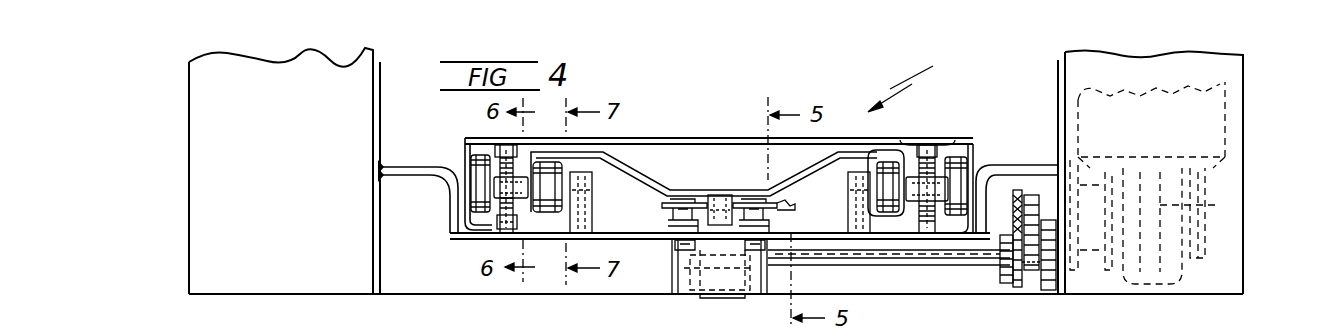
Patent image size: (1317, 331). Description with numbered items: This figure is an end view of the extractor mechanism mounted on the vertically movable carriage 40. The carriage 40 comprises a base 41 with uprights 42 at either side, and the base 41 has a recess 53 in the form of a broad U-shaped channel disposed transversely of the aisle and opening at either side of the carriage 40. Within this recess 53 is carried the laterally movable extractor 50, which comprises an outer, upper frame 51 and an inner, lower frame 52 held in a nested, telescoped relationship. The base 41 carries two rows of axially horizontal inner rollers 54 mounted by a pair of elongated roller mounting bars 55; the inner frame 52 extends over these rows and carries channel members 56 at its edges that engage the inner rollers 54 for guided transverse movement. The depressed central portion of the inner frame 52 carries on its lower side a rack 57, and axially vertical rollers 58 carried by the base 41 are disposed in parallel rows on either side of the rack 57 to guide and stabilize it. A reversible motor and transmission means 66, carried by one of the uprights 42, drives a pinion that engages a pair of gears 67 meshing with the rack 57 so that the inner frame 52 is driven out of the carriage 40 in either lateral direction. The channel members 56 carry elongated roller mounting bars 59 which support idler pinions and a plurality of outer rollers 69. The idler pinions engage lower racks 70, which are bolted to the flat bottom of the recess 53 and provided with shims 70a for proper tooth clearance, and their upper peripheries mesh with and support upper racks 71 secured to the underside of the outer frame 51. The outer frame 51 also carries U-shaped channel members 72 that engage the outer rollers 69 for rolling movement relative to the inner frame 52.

The carriage 40 is at (980, 296).
The base 41 is at (405, 166).
The uprights 42 is at (1243, 108).
The extractor 50 is at (905, 81).
The outer frame 51 is at (698, 137).
The inner frame 52 is at (644, 178).
The recess 53 is at (614, 233).
The inner rollers 54 is at (889, 170).
The roller mounting bars 55 is at (584, 197).
The channel members 56 is at (895, 218).
The rack 57 is at (724, 200).
The axially vertical rollers 58 is at (778, 206).
The roller mounting bars 59 is at (520, 198).
The motor and transmission means 66 is at (1220, 205).
The gears 67 is at (722, 300).
The outer rollers 69 is at (482, 200).
The lower racks 70 is at (500, 222).
The shims 70a is at (495, 232).
The upper racks 71 is at (500, 152).
The U-shaped channel members 72 is at (465, 186).